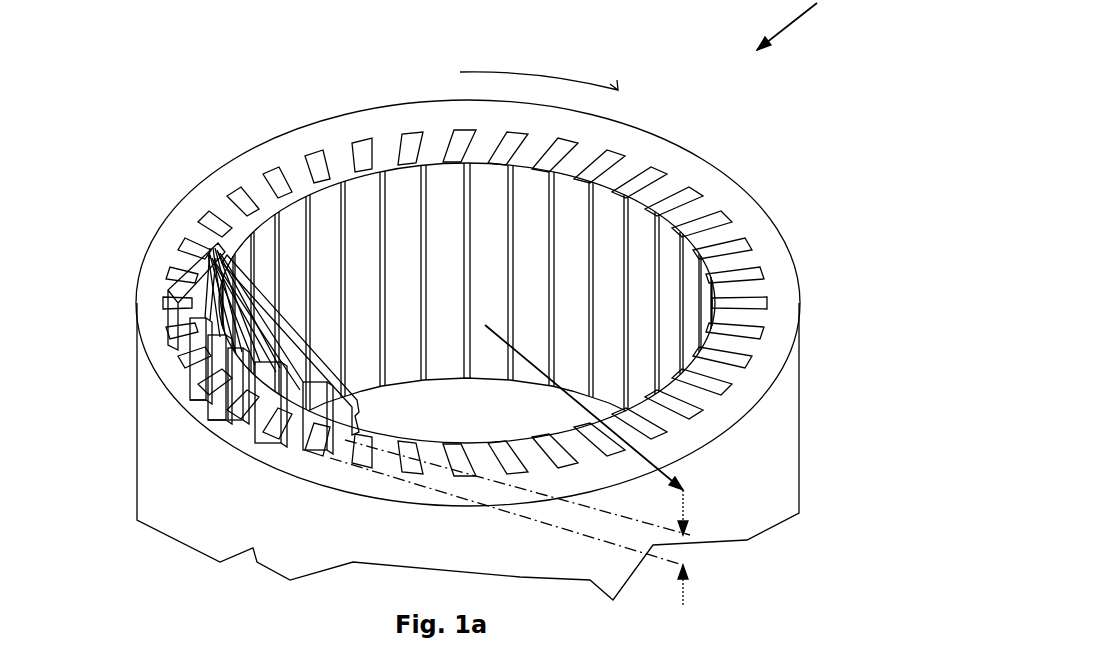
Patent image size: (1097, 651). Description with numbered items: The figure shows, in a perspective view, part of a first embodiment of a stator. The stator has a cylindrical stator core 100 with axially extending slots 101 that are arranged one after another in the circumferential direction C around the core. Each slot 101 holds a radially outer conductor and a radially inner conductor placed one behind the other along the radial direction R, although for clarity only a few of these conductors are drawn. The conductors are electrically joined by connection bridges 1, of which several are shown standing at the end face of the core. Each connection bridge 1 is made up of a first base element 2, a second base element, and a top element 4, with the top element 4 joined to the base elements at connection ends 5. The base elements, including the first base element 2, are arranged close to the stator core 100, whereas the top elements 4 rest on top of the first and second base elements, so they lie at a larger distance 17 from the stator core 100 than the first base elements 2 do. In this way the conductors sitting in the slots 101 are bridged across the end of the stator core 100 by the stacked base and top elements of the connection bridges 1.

The connection bridge 1 is at (270, 360).
The first base element 2 is at (313, 443).
The top element 4 is at (203, 343).
The connection end 5 is at (225, 387).
The distance 17 is at (687, 550).
The stator core 100 is at (717, 197).
The slot 101 is at (675, 385).
The radial direction R is at (577, 400).
The circumferential direction C is at (568, 73).